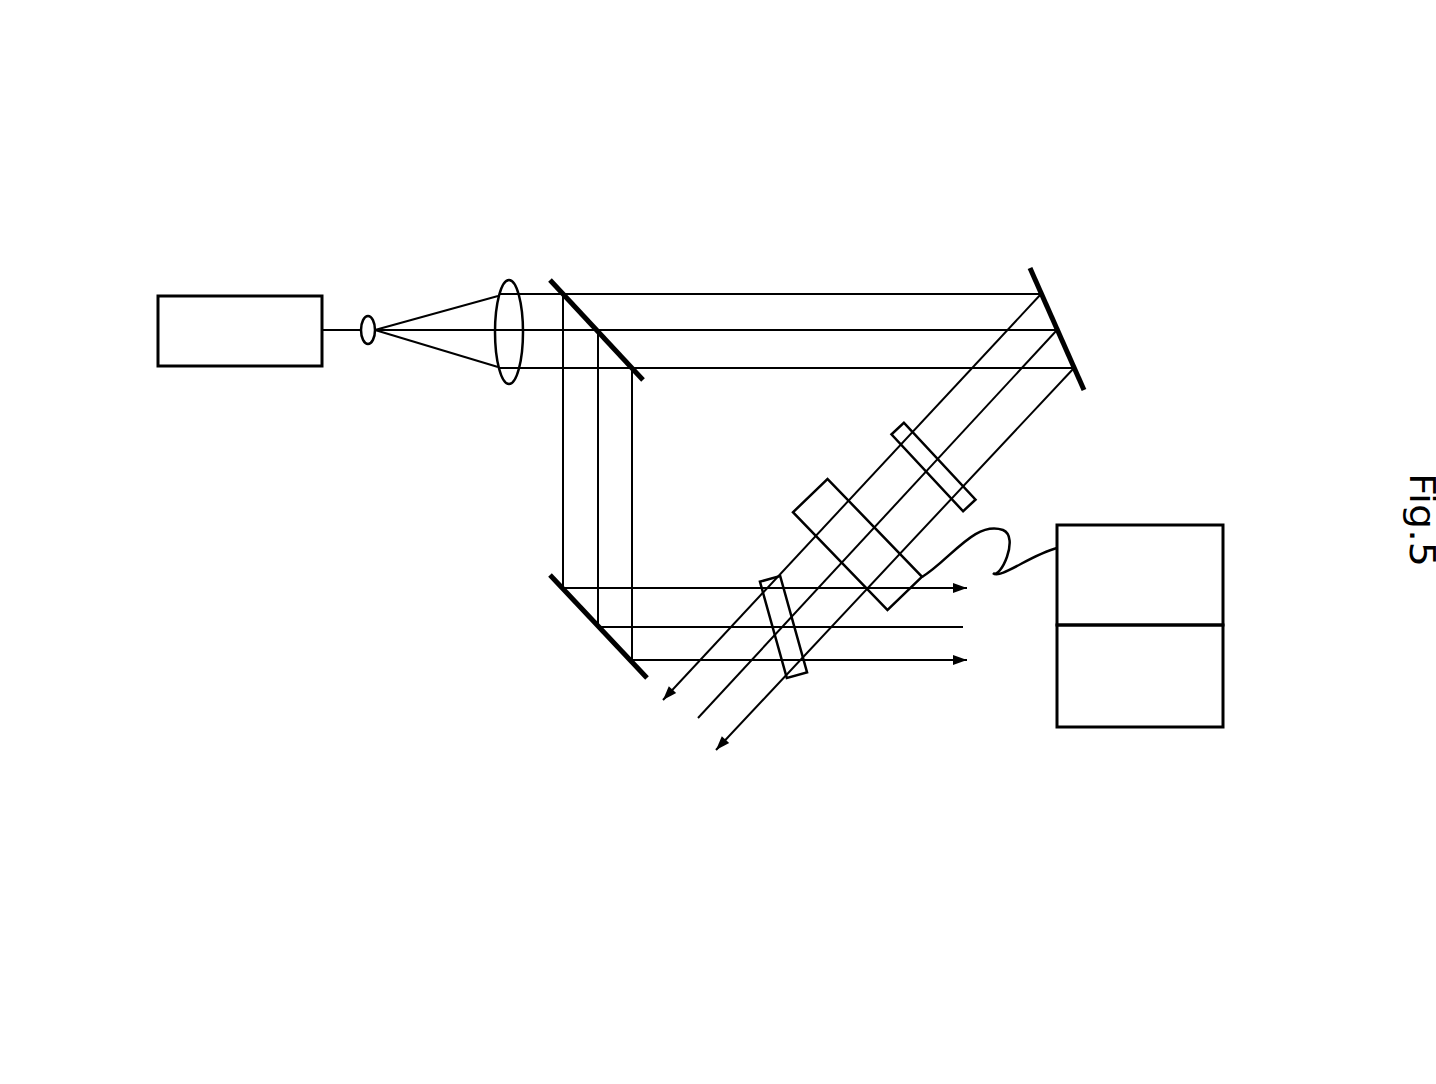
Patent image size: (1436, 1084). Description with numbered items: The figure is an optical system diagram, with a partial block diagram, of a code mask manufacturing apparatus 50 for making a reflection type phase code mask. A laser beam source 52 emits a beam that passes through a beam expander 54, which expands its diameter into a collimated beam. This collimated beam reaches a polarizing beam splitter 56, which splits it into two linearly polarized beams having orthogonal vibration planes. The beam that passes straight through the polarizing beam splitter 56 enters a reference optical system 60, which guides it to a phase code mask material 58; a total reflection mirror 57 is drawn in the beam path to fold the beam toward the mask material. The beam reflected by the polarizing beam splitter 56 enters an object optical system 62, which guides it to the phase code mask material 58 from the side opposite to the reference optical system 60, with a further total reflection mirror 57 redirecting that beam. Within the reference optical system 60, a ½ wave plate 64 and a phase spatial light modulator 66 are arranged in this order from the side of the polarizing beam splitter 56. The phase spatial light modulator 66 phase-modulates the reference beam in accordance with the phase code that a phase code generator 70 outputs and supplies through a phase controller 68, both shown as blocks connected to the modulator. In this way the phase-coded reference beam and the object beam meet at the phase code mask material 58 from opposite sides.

The code mask manufacturing apparatus 50 is at (430, 593).
The laser beam source 52 is at (216, 268).
The beam expander 54 is at (527, 276).
The polarizing beam splitter 56 is at (557, 284).
The total reflection mirror 57 is at (1040, 276).
The phase code mask material 58 is at (800, 682).
The reference optical system 60 is at (1050, 417).
The object optical system 62 is at (545, 458).
The ½ wave plate 64 is at (896, 433).
The phase spatial light modulator 66 is at (793, 505).
The phase controller 68 is at (1223, 588).
The phase code generator 70 is at (1223, 672).